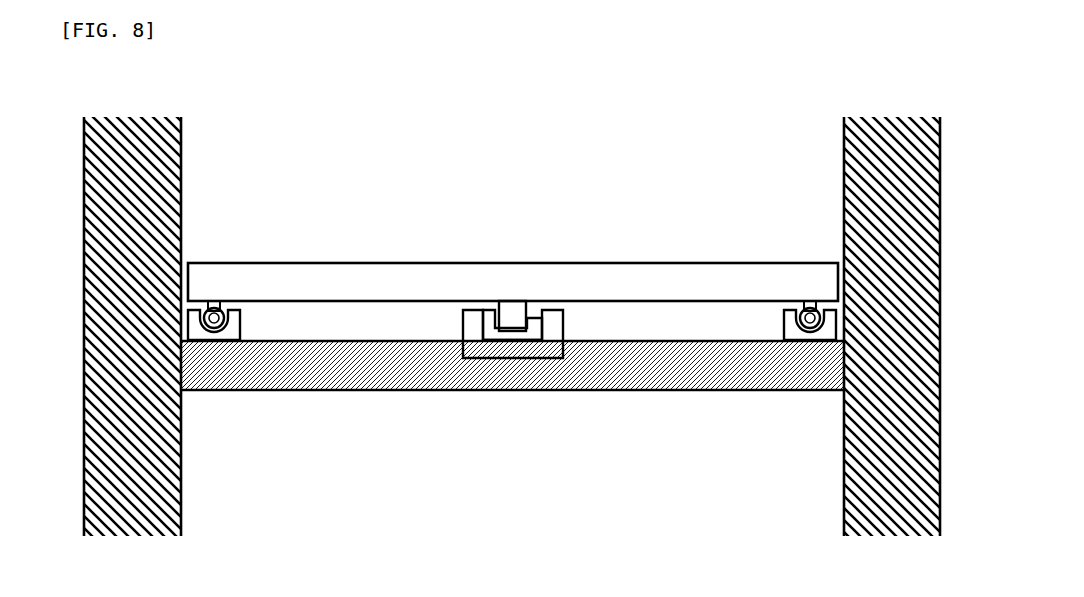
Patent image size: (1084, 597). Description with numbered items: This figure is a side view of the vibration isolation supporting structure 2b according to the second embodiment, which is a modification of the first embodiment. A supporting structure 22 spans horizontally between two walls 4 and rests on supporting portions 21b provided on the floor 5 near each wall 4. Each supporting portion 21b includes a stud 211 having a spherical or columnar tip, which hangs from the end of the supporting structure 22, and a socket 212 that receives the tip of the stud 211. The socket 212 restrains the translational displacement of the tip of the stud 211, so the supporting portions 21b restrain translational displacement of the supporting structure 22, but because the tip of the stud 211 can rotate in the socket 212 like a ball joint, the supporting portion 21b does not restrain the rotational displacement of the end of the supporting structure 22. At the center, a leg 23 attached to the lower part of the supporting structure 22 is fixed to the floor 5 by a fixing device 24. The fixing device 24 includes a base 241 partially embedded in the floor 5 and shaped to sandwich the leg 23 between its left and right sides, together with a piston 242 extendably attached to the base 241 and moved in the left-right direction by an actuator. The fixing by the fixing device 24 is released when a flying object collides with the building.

The wall 4 is at (128, 136).
The floor 5 is at (385, 382).
The vibration isolation supporting structure 2b is at (708, 262).
The supporting portion 21b is at (207, 163).
The stud 211 is at (215, 306).
The socket 212 is at (241, 320).
The supporting structure 22 is at (368, 276).
The leg 23 is at (512, 309).
The fixing device 24 is at (467, 483).
The base 241 is at (474, 352).
The piston 242 is at (533, 318).